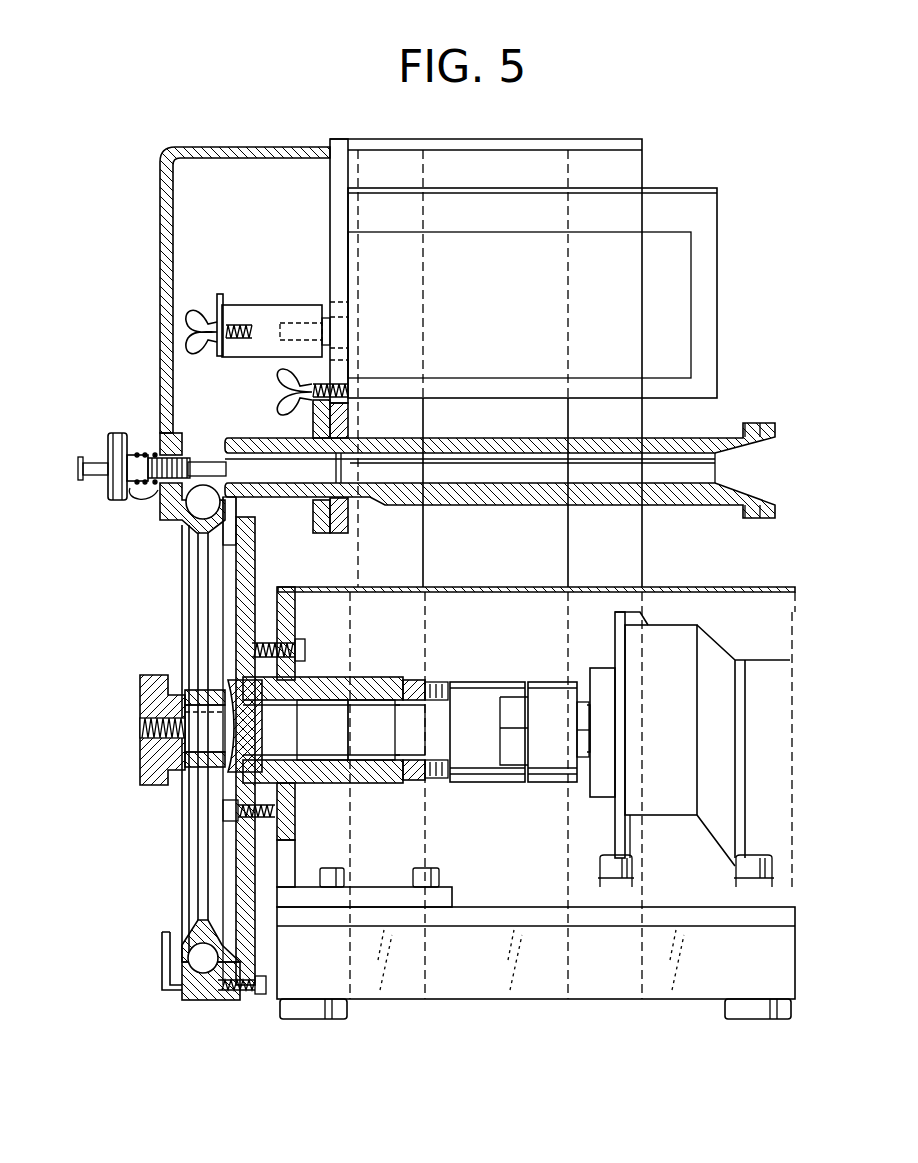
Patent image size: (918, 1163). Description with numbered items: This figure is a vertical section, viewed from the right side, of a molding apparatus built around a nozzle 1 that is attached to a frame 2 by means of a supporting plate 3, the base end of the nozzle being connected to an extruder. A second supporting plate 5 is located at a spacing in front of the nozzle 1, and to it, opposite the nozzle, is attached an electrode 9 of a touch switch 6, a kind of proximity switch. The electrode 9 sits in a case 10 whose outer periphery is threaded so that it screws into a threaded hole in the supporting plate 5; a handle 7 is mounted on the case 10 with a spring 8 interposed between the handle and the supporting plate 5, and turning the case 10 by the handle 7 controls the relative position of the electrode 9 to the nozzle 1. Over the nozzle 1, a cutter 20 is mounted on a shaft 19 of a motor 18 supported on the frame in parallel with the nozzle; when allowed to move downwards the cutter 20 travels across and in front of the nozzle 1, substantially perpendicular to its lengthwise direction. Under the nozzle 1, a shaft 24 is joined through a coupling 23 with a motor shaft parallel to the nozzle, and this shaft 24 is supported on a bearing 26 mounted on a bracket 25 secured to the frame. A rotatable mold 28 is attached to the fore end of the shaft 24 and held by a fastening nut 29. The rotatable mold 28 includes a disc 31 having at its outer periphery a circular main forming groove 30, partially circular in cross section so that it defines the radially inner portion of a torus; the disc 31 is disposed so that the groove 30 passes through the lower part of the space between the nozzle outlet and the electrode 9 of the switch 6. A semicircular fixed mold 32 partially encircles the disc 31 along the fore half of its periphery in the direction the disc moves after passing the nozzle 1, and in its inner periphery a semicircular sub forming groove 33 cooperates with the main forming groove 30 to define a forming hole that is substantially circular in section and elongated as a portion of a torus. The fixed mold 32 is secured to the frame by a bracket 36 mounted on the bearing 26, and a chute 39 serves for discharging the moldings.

The nozzle 1 is at (251, 437).
The frame 2 is at (628, 548).
The supporting plate 3 is at (330, 238).
The supporting plate 5 is at (185, 436).
The touch switch 6 is at (183, 462).
The handle 7 is at (118, 500).
The spring 8 is at (141, 452).
The electrode 9 is at (192, 468).
The case 10 is at (160, 412).
The motor 18 is at (686, 301).
The shaft 19 is at (268, 320).
The cutter 20 is at (222, 297).
The coupling 23 is at (470, 683).
The shaft 24 is at (250, 700).
The bracket 25 is at (398, 785).
The bearing 26 is at (345, 678).
The rotatable mold 28 is at (182, 840).
The fastening nut 29 is at (140, 765).
The main forming groove 30 is at (200, 512).
The disc 31 is at (205, 548).
The fixed mold 32 is at (215, 998).
The sub forming groove 33 is at (200, 966).
The bracket 36 is at (255, 920).
The chute 39 is at (160, 940).